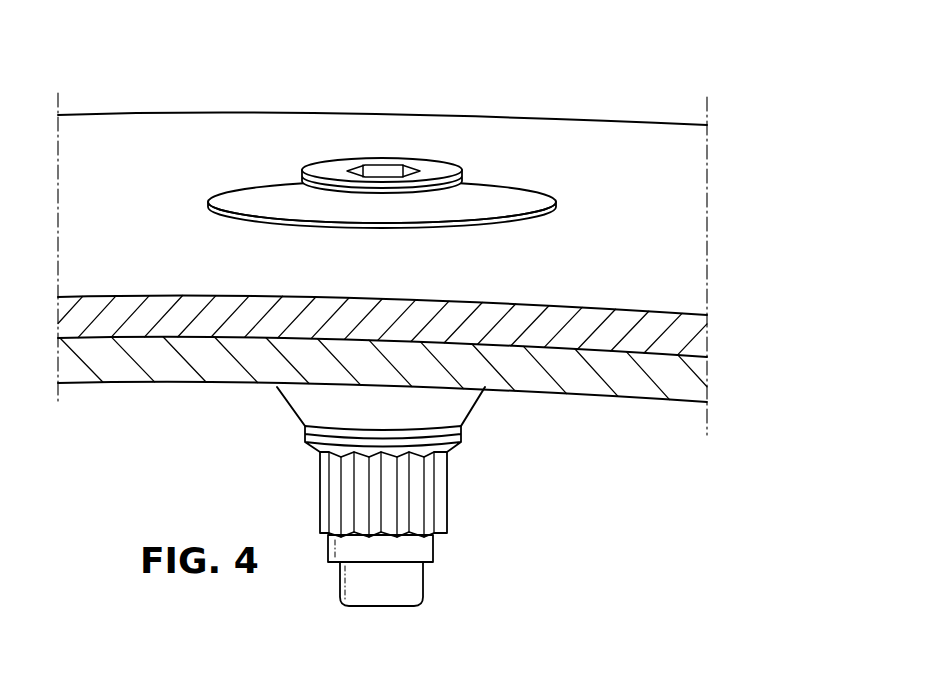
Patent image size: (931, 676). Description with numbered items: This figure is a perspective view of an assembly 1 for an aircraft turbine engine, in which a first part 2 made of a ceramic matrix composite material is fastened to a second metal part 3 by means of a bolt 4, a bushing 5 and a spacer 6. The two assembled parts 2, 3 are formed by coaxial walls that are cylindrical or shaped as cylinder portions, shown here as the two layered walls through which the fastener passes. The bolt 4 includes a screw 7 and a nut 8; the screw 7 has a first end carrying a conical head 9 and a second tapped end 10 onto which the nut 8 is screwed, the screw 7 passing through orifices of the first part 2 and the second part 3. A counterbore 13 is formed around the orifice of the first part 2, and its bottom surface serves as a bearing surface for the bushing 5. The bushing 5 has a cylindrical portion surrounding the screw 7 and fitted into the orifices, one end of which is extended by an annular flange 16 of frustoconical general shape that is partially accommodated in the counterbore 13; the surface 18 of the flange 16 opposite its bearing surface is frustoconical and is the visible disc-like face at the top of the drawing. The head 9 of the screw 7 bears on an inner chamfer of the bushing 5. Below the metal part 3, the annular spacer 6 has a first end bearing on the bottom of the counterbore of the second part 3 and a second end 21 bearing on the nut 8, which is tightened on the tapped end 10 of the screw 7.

The assembly 1 is at (676, 80).
The first part 2 is at (693, 282).
The second part 3 is at (693, 380).
The bolt 4 is at (478, 503).
The bushing 5 is at (503, 197).
The annular flange 16 is at (341, 319).
The surface of the flange 18 is at (341, 319).
The counterbore 13 is at (225, 208).
The screw 7 is at (330, 170).
The conical head 9 is at (382, 175).
The spacer 6 is at (447, 412).
The second end 21 is at (381, 419).
The nut 8 is at (330, 481).
The tapped end 10 is at (408, 580).